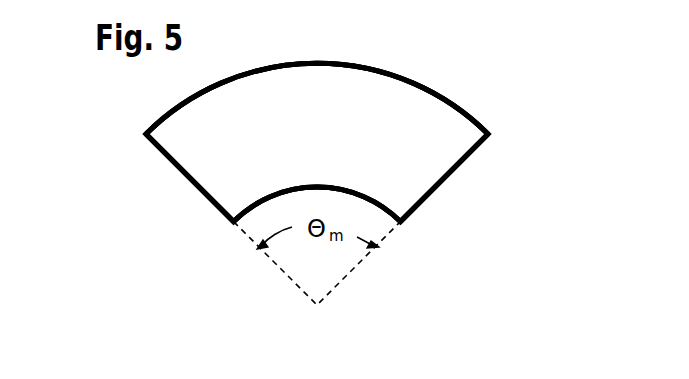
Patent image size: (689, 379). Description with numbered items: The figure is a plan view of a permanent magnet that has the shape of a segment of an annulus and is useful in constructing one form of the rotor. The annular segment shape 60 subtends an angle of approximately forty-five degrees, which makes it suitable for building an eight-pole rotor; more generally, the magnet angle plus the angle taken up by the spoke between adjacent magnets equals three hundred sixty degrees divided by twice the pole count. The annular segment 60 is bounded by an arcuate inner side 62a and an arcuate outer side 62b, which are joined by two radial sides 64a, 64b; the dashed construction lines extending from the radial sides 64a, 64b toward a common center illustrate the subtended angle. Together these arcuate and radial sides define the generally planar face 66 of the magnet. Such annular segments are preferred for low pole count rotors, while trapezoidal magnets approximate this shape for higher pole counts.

The annular segment shape 60 is at (116, 179).
The arcuate inner side 62a is at (373, 205).
The arcuate outer side 62b is at (465, 107).
The radial side 64a is at (200, 189).
The radial side 64b is at (457, 173).
The planar face 66 is at (303, 132).